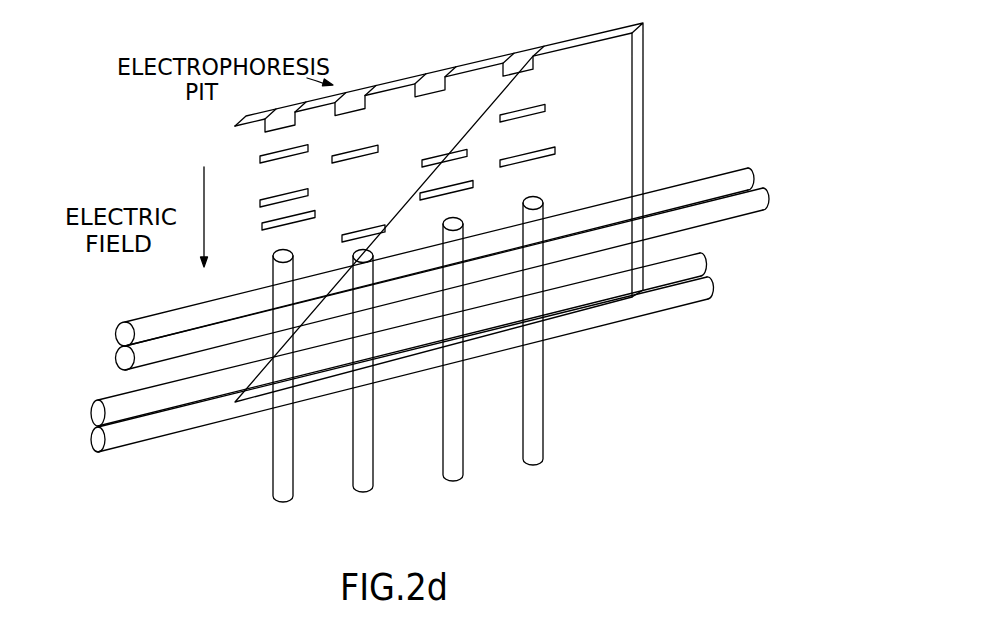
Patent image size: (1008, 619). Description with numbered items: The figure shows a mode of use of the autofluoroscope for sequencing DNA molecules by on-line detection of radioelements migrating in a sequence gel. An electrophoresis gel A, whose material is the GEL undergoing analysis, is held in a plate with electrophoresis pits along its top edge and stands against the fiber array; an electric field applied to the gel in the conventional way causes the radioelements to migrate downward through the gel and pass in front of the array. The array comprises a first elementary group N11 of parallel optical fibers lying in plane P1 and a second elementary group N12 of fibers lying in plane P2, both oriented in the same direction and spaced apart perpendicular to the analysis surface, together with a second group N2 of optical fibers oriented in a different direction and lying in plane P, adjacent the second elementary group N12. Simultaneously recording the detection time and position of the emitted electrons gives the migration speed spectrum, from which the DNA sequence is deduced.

The electrophoresis gel A is at (640, 54).
The electrophoresis gel GEL is at (618, 95).
The first elementary group N11 is at (443, 257).
The second elementary group N12 is at (710, 290).
The second group N2 is at (543, 440).
The plane P1 is at (477, 244).
The plane P2 is at (468, 342).
The plane P is at (550, 350).